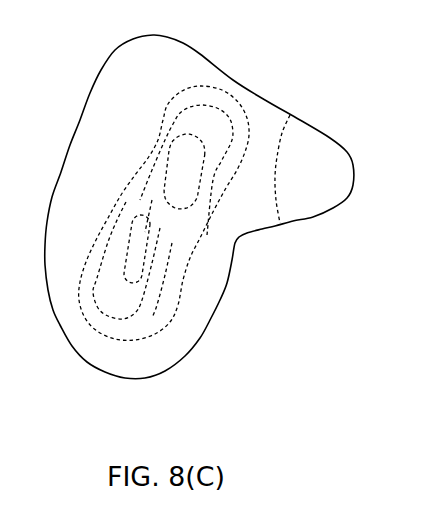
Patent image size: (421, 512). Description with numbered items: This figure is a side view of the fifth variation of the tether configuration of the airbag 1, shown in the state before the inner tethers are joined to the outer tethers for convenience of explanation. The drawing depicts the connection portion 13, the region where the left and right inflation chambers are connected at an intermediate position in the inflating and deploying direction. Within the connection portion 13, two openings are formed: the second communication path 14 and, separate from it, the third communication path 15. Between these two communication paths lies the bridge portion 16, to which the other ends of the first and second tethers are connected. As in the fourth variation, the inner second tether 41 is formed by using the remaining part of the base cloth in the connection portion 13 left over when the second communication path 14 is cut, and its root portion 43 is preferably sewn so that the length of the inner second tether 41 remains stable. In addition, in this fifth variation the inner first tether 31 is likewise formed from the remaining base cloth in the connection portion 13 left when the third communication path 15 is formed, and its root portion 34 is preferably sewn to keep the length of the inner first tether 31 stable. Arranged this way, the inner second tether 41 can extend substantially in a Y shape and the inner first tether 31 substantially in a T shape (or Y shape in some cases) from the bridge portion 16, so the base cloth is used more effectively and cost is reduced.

The airbag 1 is at (52, 75).
The connection portion 13 is at (145, 155).
The second communication path 14 is at (213, 137).
The third communication path 15 is at (132, 307).
The bridge portion 16 is at (152, 212).
The inner first tether 31 is at (132, 249).
The root portion 34 is at (157, 222).
The inner second tether 41 is at (185, 157).
The root portion 43 is at (175, 200).